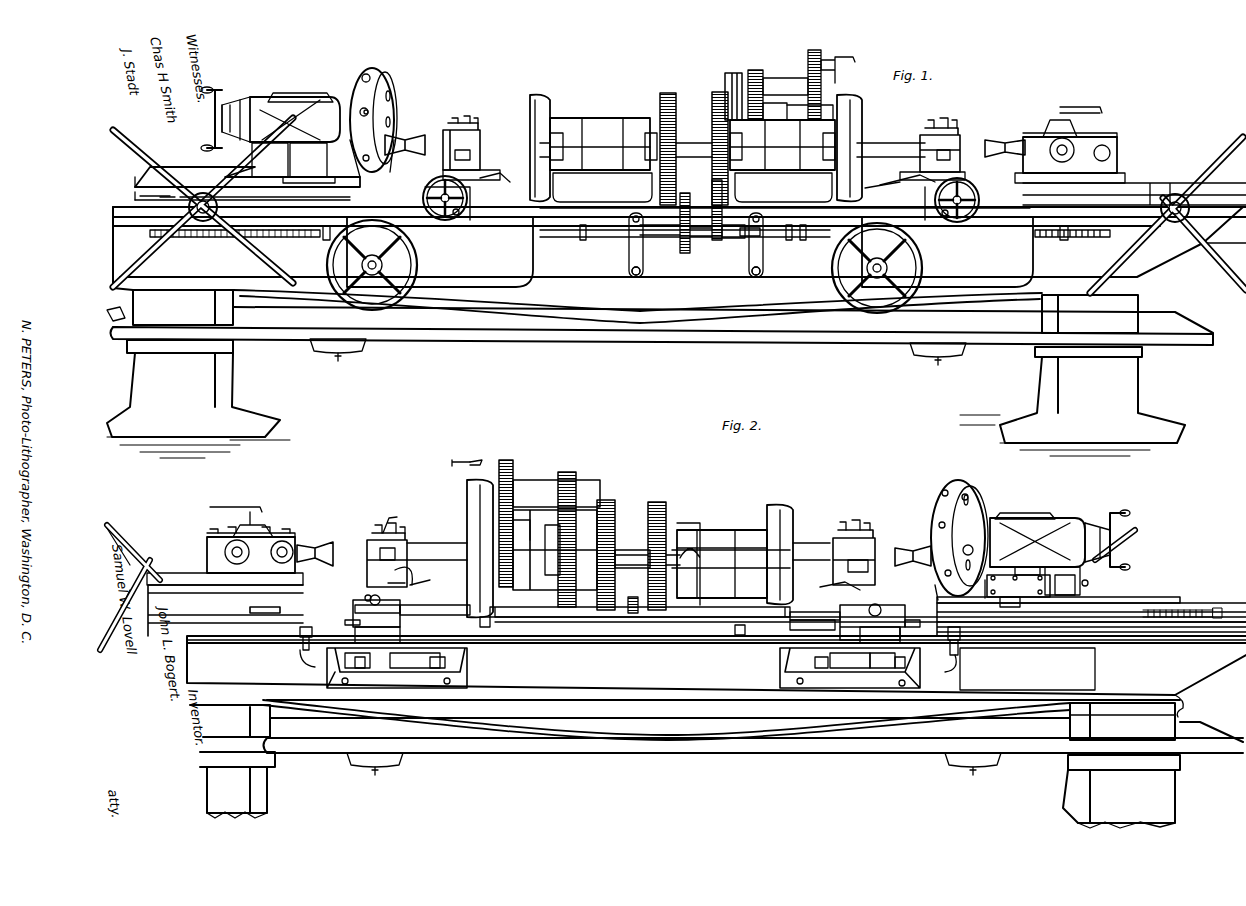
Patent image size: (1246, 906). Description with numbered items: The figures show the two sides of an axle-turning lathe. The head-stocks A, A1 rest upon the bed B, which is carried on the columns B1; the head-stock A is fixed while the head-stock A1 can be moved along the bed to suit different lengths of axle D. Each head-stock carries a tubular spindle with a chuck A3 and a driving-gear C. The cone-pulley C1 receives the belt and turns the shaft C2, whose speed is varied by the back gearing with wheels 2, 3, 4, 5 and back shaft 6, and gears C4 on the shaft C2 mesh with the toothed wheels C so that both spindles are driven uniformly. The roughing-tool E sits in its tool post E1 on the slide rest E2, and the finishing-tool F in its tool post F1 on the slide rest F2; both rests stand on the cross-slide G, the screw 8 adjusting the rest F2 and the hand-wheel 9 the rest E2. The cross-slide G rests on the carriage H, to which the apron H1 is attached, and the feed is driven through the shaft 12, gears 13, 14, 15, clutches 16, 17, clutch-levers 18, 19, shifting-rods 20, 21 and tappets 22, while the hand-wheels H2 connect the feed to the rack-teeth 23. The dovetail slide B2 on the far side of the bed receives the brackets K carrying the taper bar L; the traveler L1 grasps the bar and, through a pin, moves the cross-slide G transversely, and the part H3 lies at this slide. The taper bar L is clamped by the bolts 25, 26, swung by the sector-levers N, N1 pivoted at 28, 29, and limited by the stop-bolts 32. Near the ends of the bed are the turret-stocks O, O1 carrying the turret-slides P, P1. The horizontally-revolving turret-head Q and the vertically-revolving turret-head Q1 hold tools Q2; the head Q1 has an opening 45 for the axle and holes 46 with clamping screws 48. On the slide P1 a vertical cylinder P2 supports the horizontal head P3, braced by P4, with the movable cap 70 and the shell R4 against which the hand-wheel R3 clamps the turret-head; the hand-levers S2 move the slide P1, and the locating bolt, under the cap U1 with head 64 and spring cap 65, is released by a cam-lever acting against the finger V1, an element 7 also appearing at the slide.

In FIG. 1, the bed B is at (679, 265).
In FIG. 2, the bed B is at (1051, 668).
In FIG. 1, the columns B1 is at (646, 374).
In FIG. 2, the columns B1 is at (685, 765).
In FIG. 2, the dovetail slide B2 is at (716, 676).
In FIG. 1, the head-stock A is at (782, 161).
In FIG. 1, the head-stock A1 is at (606, 151).
In FIG. 2, the head-stock A1 is at (722, 557).
In FIG. 1, the chuck A3 is at (694, 148).
In FIG. 2, the chuck A3 is at (623, 538).
In FIG. 1, the driving-gear C is at (694, 139).
In FIG. 2, the driving-gear C is at (631, 545).
In FIG. 1, the cone-pulley C1 is at (775, 100).
In FIG. 2, the cone-pulley C1 is at (555, 550).
In FIG. 2, the shaft C2 is at (702, 559).
In FIG. 2, the gears C4 is at (696, 588).
In FIG. 1, the axle D is at (732, 148).
In FIG. 2, the axle D is at (618, 544).
In FIG. 1, the roughing-tool E is at (710, 145).
In FIG. 2, the roughing-tool E is at (854, 552).
In FIG. 1, the tool post E1 is at (969, 163).
In FIG. 2, the tool post E1 is at (872, 545).
In FIG. 1, the slide rest E2 is at (679, 211).
In FIG. 2, the slide rest E2 is at (420, 575).
In FIG. 2, the finishing-tool F is at (387, 552).
In FIG. 1, the tool post F1 is at (707, 167).
In FIG. 2, the tool post F1 is at (383, 548).
In FIG. 1, the slide rest F2 is at (890, 180).
In FIG. 2, the slide rest F2 is at (892, 590).
In FIG. 2, the cross-slide G is at (634, 613).
In FIG. 1, the carriage H is at (687, 178).
In FIG. 2, the carriage H is at (635, 605).
In FIG. 1, the apron H1 is at (690, 252).
In FIG. 1, the hand-wheels H2 is at (636, 266).
In FIG. 2, the saddle lug H3 is at (625, 621).
In FIG. 2, the brackets K is at (623, 668).
In FIG. 2, the taper bar L is at (617, 617).
In FIG. 2, the traveler L1 is at (627, 635).
In FIG. 2, the sector-lever N is at (630, 660).
In FIG. 2, the sector-lever N1 is at (612, 660).
In FIG. 1, the turret-stock O is at (1134, 195).
In FIG. 2, the turret-stock O is at (225, 610).
In FIG. 1, the turret-stock O1 is at (242, 195).
In FIG. 2, the turret-stock O1 is at (1091, 619).
In FIG. 1, the turret-slide P is at (1070, 146).
In FIG. 2, the turret-slide P is at (225, 546).
In FIG. 1, the turret-slide P1 is at (247, 180).
In FIG. 2, the turret-slide P1 is at (1051, 587).
In FIG. 1, the vertical cylinder P2 is at (309, 163).
In FIG. 2, the vertical cylinder P2 is at (1027, 563).
In FIG. 1, the horizontal head P3 is at (281, 119).
In FIG. 2, the horizontal head P3 is at (1050, 542).
In FIG. 1, the brace P4 is at (270, 160).
In FIG. 2, the brace P4 is at (1062, 580).
In FIG. 1, the horizontally-revolving turret-head Q is at (1095, 158).
In FIG. 2, the horizontally-revolving turret-head Q is at (274, 558).
In FIG. 1, the vertically-revolving turret-head Q1 is at (373, 107).
In FIG. 2, the vertically-revolving turret-head Q1 is at (959, 530).
In FIG. 1, the tools Q2 is at (406, 135).
In FIG. 2, the tools Q2 is at (614, 543).
In FIG. 1, the hand-wheel R3 is at (208, 119).
In FIG. 2, the hand-wheel R3 is at (1120, 540).
In FIG. 1, the shell R4 is at (236, 100).
In FIG. 2, the shell R4 is at (1090, 525).
In FIG. 1, the hand-levers S2 is at (679, 205).
In FIG. 2, the hand-levers S2 is at (621, 587).
In FIG. 2, the cap U1 is at (1018, 586).
In FIG. 2, the finger V1 is at (1010, 597).
In FIG. 1, the back-gearing wheel 2 is at (810, 111).
In FIG. 2, the back-gearing wheel 2 is at (521, 530).
In FIG. 1, the back-gearing wheel 3 is at (831, 77).
In FIG. 2, the back-gearing wheel 3 is at (488, 516).
In FIG. 1, the back-gearing wheel 4 is at (755, 85).
In FIG. 2, the back-gearing wheel 4 is at (567, 531).
In FIG. 1, the back-gearing wheel 5 is at (775, 111).
In FIG. 2, the back-gearing wheel 5 is at (552, 550).
In FIG. 1, the back shaft 6 is at (785, 86).
In FIG. 2, the back shaft 6 is at (556, 493).
In FIG. 1, the pin 7 is at (750, 239).
In FIG. 2, the pin 7 is at (358, 590).
In FIG. 2, the screw 8 is at (370, 598).
In FIG. 1, the hand-wheel 9 is at (450, 215).
In FIG. 1, the shaft 12 is at (716, 233).
In FIG. 1, the gear 13 is at (709, 206).
In FIG. 1, the gear 14 is at (661, 242).
In FIG. 1, the gear 15 is at (694, 223).
In FIG. 2, the gear 15 is at (636, 596).
In FIG. 1, the clutch 16 is at (647, 245).
In FIG. 1, the clutch 17 is at (750, 245).
In FIG. 1, the clutch-lever 18 is at (440, 212).
In FIG. 1, the clutch-lever 19 is at (769, 255).
In FIG. 1, the shifting-rod 20 is at (685, 237).
In FIG. 1, the shifting-rod 21 is at (810, 237).
In FIG. 1, the collars 22 is at (685, 239).
In FIG. 1, the rack-teeth 23 is at (671, 239).
In FIG. 2, the bolt 25 is at (618, 621).
In FIG. 2, the bolt 26 is at (977, 651).
In FIG. 2, the pivot 28 is at (631, 661).
In FIG. 2, the pivot 29 is at (633, 662).
In FIG. 2, the stop-bolts 32 is at (630, 662).
In FIG. 1, the opening 45 is at (390, 163).
In FIG. 2, the opening 45 is at (945, 562).
In FIG. 1, the holes 46 is at (392, 96).
In FIG. 2, the holes 46 is at (245, 550).
In FIG. 1, the screw 48 is at (365, 103).
In FIG. 2, the screw 48 is at (968, 488).
In FIG. 2, the head 64 is at (1092, 577).
In FIG. 2, the cap 65 is at (1065, 585).
In FIG. 1, the movable cap 70 is at (300, 90).
In FIG. 2, the movable cap 70 is at (1025, 507).